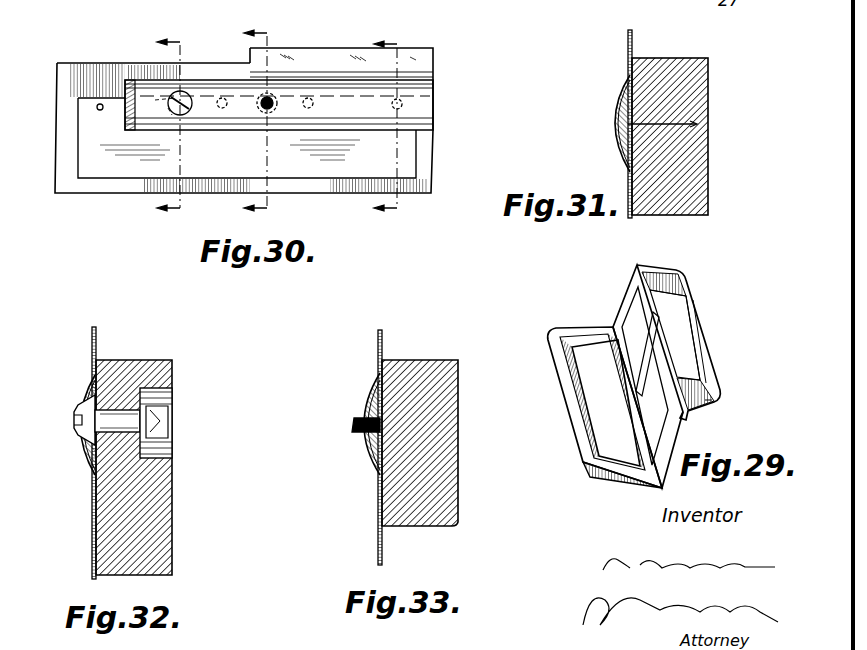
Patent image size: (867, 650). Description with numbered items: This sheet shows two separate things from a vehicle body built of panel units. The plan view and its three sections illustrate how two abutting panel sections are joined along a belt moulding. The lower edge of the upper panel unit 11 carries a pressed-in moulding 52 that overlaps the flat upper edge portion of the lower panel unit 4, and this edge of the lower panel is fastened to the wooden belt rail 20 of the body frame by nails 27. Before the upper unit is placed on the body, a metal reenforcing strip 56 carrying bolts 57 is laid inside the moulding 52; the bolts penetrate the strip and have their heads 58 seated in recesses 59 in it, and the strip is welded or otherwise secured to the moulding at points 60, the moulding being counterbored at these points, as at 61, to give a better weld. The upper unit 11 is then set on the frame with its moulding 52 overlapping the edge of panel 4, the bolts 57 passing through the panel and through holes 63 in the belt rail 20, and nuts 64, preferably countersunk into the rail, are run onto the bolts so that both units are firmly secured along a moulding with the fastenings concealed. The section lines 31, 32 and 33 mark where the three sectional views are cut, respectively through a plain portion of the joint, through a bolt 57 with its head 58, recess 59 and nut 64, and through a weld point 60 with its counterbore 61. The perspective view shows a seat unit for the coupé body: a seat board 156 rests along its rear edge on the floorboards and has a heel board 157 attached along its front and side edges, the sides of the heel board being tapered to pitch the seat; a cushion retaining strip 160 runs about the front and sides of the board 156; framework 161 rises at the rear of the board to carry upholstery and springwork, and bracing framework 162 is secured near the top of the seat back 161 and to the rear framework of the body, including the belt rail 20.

In FIG. 30, the lower panel unit 4 is at (130, 165).
In FIG. 31, the lower panel unit 4 is at (628, 181).
In FIG. 32, the lower panel unit 4 is at (92, 536).
In FIG. 33, the lower panel unit 4 is at (378, 548).
In FIG. 30, the upper panel unit 11 is at (325, 60).
In FIG. 31, the upper panel unit 11 is at (628, 50).
In FIG. 32, the upper panel unit 11 is at (92, 341).
In FIG. 33, the upper panel unit 11 is at (378, 343).
In FIG. 30, the belt rail 20 is at (62, 143).
In FIG. 31, the belt rail 20 is at (697, 97).
In FIG. 32, the belt rail 20 is at (160, 522).
In FIG. 33, the belt rail 20 is at (446, 445).
In FIG. 30, the nails 27 is at (100, 111).
In FIG. 31, the nails 27 is at (680, 128).
In FIG. 30, the section line 31— 31 is at (400, 124).
In FIG. 30, the section line 32— 32 is at (183, 125).
In FIG. 30, the section line 33— 33 is at (270, 122).
In FIG. 30, the pressed-in moulding 52 is at (430, 89).
In FIG. 31, the pressed-in moulding 52 is at (612, 95).
In FIG. 32, the pressed-in moulding 52 is at (80, 432).
In FIG. 33, the pressed-in moulding 52 is at (362, 456).
In FIG. 30, the metal reenforcing strip 56 is at (145, 90).
In FIG. 31, the metal reenforcing strip 56 is at (610, 118).
In FIG. 32, the metal reenforcing strip 56 is at (85, 465).
In FIG. 33, the metal reenforcing strip 56 is at (360, 390).
In FIG. 32, the bolts 57 is at (110, 415).
In FIG. 30, the bolt heads 58 is at (186, 108).
In FIG. 32, the bolt heads 58 is at (77, 410).
In FIG. 32, the recesses 59 is at (74, 421).
In FIG. 30, the weld points 60 is at (271, 109).
In FIG. 33, the weld points 60 is at (354, 428).
In FIG. 33, the counterbores 61 is at (368, 412).
In FIG. 32, the holes 63 is at (124, 422).
In FIG. 32, the nuts 64 is at (155, 428).
In FIG. 29, the seat board 156 is at (582, 330).
In FIG. 29, the heel board 157 is at (600, 488).
In FIG. 29, the cushion retaining strip 160 is at (565, 393).
In FIG. 29, the framework 161 is at (650, 338).
In FIG. 29, the bracing framework 162 is at (690, 348).